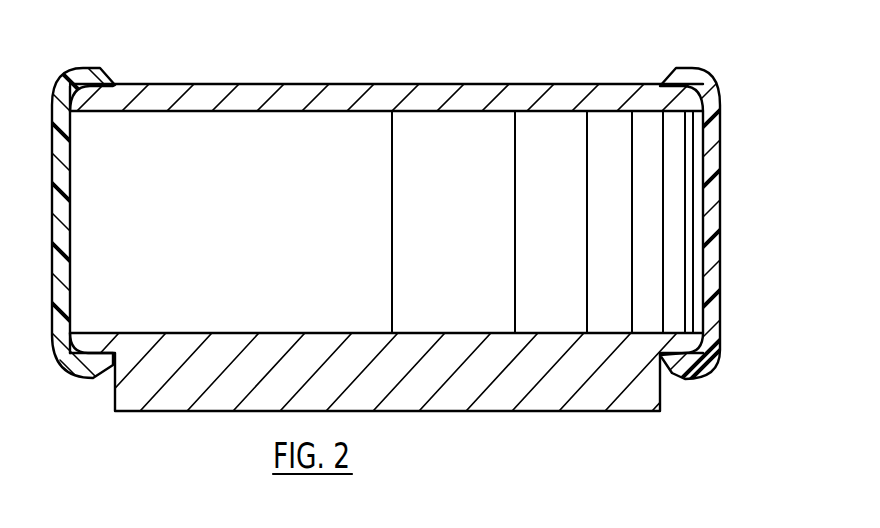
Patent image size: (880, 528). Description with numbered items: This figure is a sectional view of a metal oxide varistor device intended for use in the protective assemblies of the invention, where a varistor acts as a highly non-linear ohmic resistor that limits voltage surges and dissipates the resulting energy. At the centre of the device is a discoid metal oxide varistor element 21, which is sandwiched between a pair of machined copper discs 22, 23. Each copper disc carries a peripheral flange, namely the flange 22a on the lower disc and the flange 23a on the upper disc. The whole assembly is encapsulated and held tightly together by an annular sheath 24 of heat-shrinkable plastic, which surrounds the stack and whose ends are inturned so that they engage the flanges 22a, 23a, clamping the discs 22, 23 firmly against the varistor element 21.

The metal oxide varistor element 21 is at (678, 178).
The machined copper disc 22 is at (545, 412).
The peripheral flange 22a is at (85, 332).
The machined copper disc 23 is at (248, 83).
The peripheral flange 23a is at (76, 118).
The annular sheath 24 is at (722, 238).